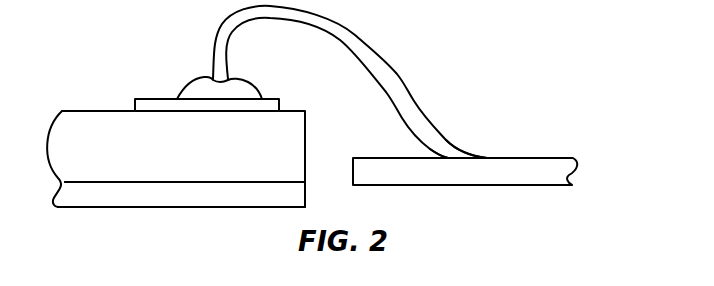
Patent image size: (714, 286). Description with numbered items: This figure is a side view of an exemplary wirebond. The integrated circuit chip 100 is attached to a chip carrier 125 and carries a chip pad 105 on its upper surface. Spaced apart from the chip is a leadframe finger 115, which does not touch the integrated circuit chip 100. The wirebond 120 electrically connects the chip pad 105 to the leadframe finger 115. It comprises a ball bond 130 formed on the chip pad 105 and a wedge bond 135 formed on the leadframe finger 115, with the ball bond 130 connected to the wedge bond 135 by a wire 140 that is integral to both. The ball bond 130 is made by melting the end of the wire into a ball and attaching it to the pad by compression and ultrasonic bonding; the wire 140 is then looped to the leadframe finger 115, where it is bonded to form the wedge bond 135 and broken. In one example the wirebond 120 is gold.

The integrated circuit chip 100 is at (257, 161).
The chip pad 105 is at (147, 104).
The leadframe finger 115 is at (540, 179).
The wirebond 120 is at (487, 36).
The chip carrier 125 is at (245, 201).
The ball bond 130 is at (202, 92).
The wedge bond 135 is at (455, 155).
The wire 140 is at (395, 70).